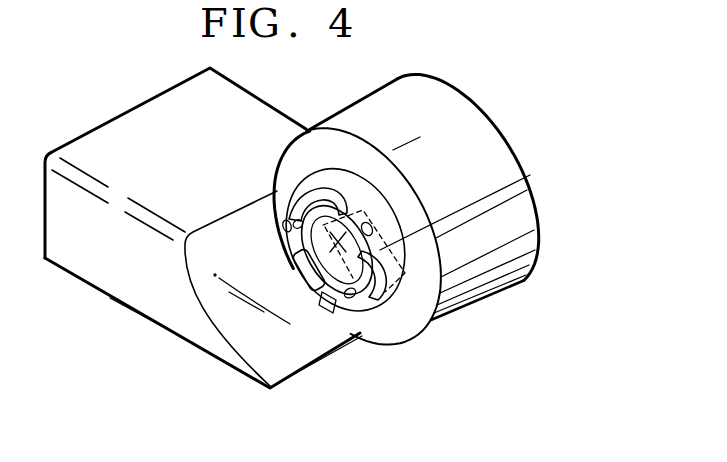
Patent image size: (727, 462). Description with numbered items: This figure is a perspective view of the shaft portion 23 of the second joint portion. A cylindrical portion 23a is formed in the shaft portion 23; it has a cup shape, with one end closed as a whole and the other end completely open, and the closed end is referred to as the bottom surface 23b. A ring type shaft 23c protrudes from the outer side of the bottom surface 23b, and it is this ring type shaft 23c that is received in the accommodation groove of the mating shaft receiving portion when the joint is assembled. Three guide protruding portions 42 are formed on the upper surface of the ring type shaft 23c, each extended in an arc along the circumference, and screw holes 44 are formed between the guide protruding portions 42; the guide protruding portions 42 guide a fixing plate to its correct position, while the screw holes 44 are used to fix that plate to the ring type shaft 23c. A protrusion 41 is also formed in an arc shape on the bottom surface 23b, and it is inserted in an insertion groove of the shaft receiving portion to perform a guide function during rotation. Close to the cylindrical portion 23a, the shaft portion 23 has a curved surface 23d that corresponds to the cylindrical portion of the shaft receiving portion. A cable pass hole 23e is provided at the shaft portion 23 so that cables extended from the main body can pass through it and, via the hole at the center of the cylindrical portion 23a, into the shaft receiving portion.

The shaft portion 23 is at (442, 264).
The cylindrical portion 23a is at (496, 132).
The bottom surface 23b is at (413, 331).
The ring type shaft 23c is at (437, 327).
The curved surface 23d is at (257, 353).
The cable pass hole 23e is at (542, 170).
The protrusion 41 is at (337, 312).
The guide protruding portions 42 is at (353, 297).
The screw holes 44 is at (290, 233).